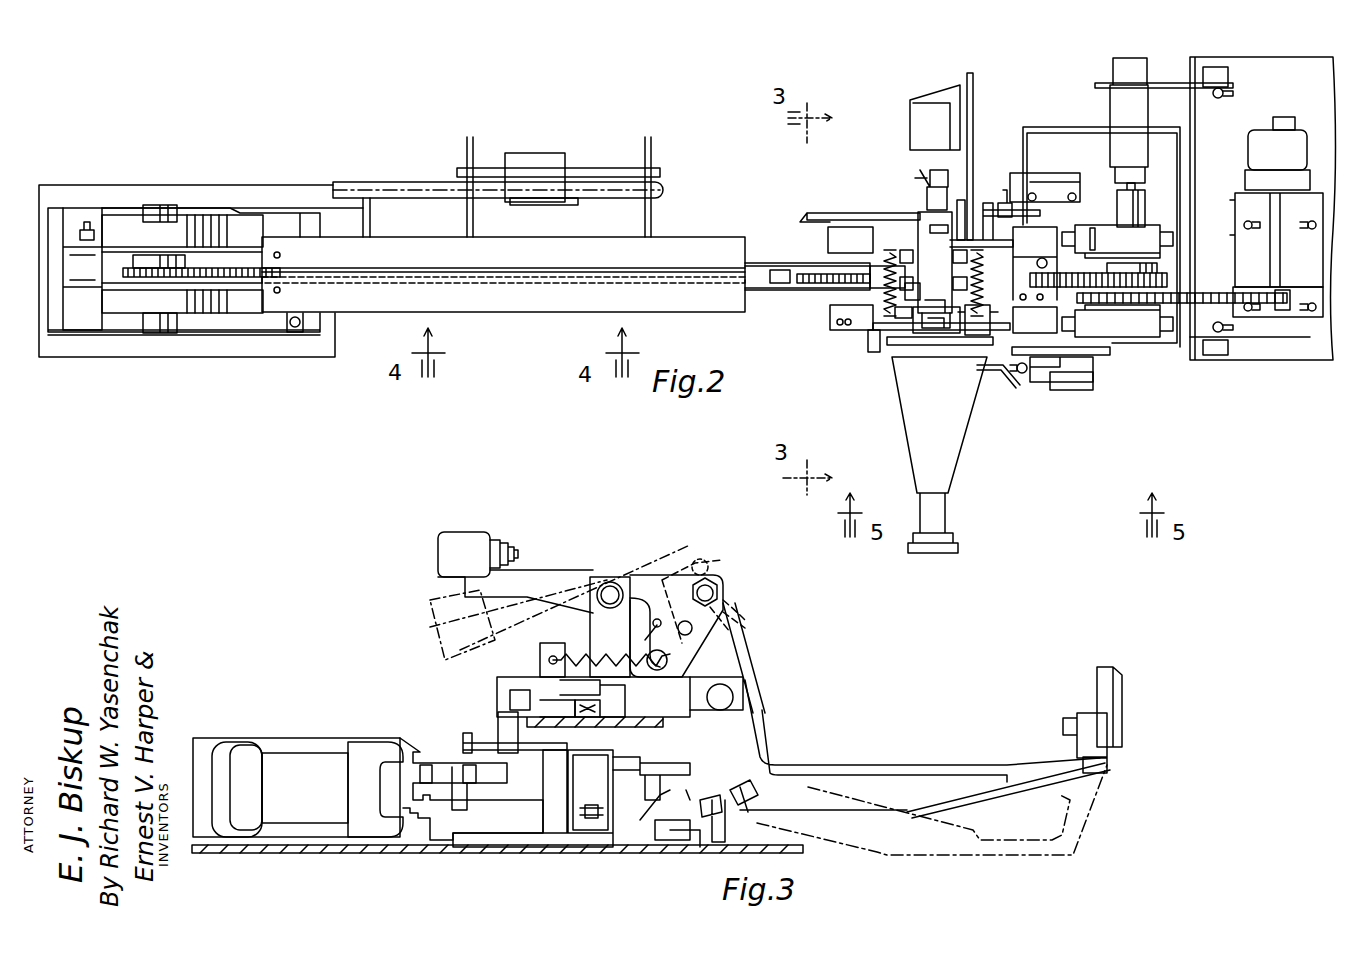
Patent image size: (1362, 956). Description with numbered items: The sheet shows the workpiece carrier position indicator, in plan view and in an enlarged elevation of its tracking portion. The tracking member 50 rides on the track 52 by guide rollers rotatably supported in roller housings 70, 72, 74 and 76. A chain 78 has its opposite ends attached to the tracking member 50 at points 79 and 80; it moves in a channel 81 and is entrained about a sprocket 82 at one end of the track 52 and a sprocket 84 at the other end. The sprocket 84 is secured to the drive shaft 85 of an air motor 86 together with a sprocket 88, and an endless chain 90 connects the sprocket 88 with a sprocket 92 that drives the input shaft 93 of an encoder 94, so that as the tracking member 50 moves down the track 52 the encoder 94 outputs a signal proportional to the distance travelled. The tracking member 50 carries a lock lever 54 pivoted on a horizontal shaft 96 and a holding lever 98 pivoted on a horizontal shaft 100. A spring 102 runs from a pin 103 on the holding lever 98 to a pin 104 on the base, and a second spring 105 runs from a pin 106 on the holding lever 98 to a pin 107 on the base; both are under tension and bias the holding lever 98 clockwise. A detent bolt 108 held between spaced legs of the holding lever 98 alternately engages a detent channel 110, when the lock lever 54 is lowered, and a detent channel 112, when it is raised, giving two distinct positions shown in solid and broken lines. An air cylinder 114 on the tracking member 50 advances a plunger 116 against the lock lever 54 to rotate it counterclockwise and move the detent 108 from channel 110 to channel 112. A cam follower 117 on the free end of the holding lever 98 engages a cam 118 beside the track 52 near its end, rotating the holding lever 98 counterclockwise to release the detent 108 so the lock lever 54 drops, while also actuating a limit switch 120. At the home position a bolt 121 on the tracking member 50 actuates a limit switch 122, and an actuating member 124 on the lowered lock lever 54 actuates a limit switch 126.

In FIG. 2, the tracking member 50 is at (872, 158).
In FIG. 3, the tracking member 50 is at (767, 668).
In FIG. 2, the track 52 is at (533, 313).
In FIG. 3, the track 52 is at (527, 723).
In FIG. 2, the lock lever 54 is at (937, 470).
In FIG. 3, the lock lever 54 is at (888, 768).
In FIG. 2, the roller housing 70 is at (840, 233).
In FIG. 2, the roller housing 72 is at (860, 322).
In FIG. 2, the roller housing 74 is at (1055, 225).
In FIG. 2, the roller housing 76 is at (1045, 327).
In FIG. 2, the chain 78 is at (807, 278).
In FIG. 3, the chain 78 is at (593, 710).
In FIG. 2, the attachment point 79 is at (833, 284).
In FIG. 2, the attachment point 80 is at (1042, 262).
In FIG. 2, the channel 81 is at (440, 280).
In FIG. 3, the channel 81 is at (593, 715).
In FIG. 2, the sprocket 82 is at (145, 262).
In FIG. 2, the sprocket 84 is at (1153, 273).
In FIG. 2, the drive shaft 85 is at (1140, 187).
In FIG. 2, the air motor 86 is at (1128, 118).
In FIG. 2, the sprocket 88 is at (1143, 303).
In FIG. 2, the endless chain 90 is at (1260, 307).
In FIG. 2, the sprocket 92 is at (1283, 307).
In FIG. 2, the input shaft 93 is at (1277, 207).
In FIG. 2, the encoder 94 is at (1283, 137).
In FIG. 2, the shaft 96 is at (870, 352).
In FIG. 3, the shaft 96 is at (727, 692).
In FIG. 2, the holding lever 98 is at (935, 240).
In FIG. 3, the holding lever 98 is at (523, 580).
In FIG. 2, the shaft 100 is at (915, 297).
In FIG. 3, the shaft 100 is at (610, 590).
In FIG. 2, the spring 102 is at (893, 270).
In FIG. 3, the spring 102 is at (613, 627).
In FIG. 2, the pin 103 is at (903, 313).
In FIG. 3, the pin 103 is at (657, 617).
In FIG. 2, the pin 104 is at (890, 253).
In FIG. 3, the pin 104 is at (550, 660).
In FIG. 2, the second spring 105 is at (985, 270).
In FIG. 2, the pin 106 is at (977, 230).
In FIG. 2, the pin 107 is at (977, 320).
In FIG. 2, the bolt 108 is at (907, 333).
In FIG. 3, the bolt 108 is at (713, 588).
In FIG. 3, the detent channel 110 is at (674, 575).
In FIG. 3, the detent channel 112 is at (730, 607).
In FIG. 2, the air cylinder 114 is at (937, 122).
In FIG. 3, the air cylinder 114 is at (307, 757).
In FIG. 3, the plunger 116 is at (687, 790).
In FIG. 2, the cam follower 117 is at (942, 193).
In FIG. 3, the cam follower 117 is at (450, 533).
In FIG. 2, the cam 118 is at (382, 187).
In FIG. 2, the limit switch 120 is at (540, 162).
In FIG. 2, the bolt 121 is at (1005, 213).
In FIG. 2, the limit switch 122 is at (1025, 192).
In FIG. 2, the actuating member 124 is at (995, 375).
In FIG. 2, the limit switch 126 is at (1087, 383).